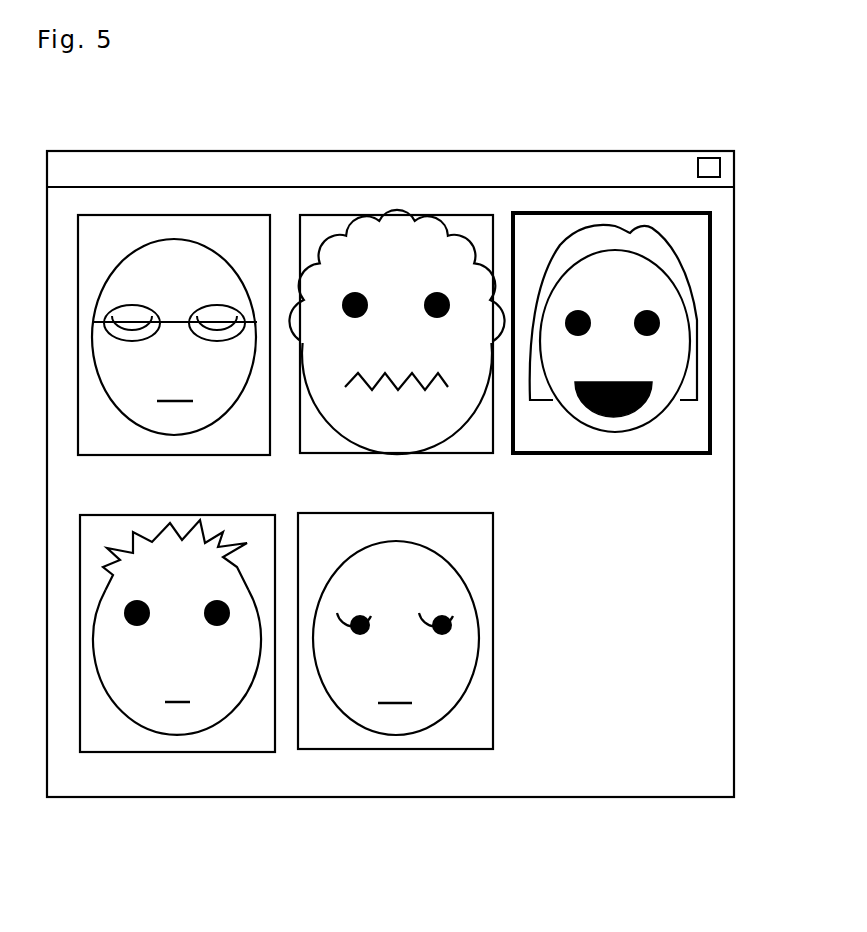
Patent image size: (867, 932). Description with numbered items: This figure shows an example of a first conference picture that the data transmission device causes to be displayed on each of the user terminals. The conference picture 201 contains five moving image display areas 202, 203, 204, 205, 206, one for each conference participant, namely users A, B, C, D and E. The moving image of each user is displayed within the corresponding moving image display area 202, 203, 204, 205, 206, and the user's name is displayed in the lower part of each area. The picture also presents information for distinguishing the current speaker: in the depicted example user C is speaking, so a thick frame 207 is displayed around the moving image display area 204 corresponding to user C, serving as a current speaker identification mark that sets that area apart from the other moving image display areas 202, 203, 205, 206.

The image list display window 201 is at (669, 150).
The moving image display area 202 is at (102, 225).
The moving image display area 203 is at (313, 225).
The moving image display area 204 is at (535, 222).
The moving image display area 205 is at (103, 740).
The moving image display area 206 is at (323, 740).
The selection frame (cursor) 207 is at (711, 332).